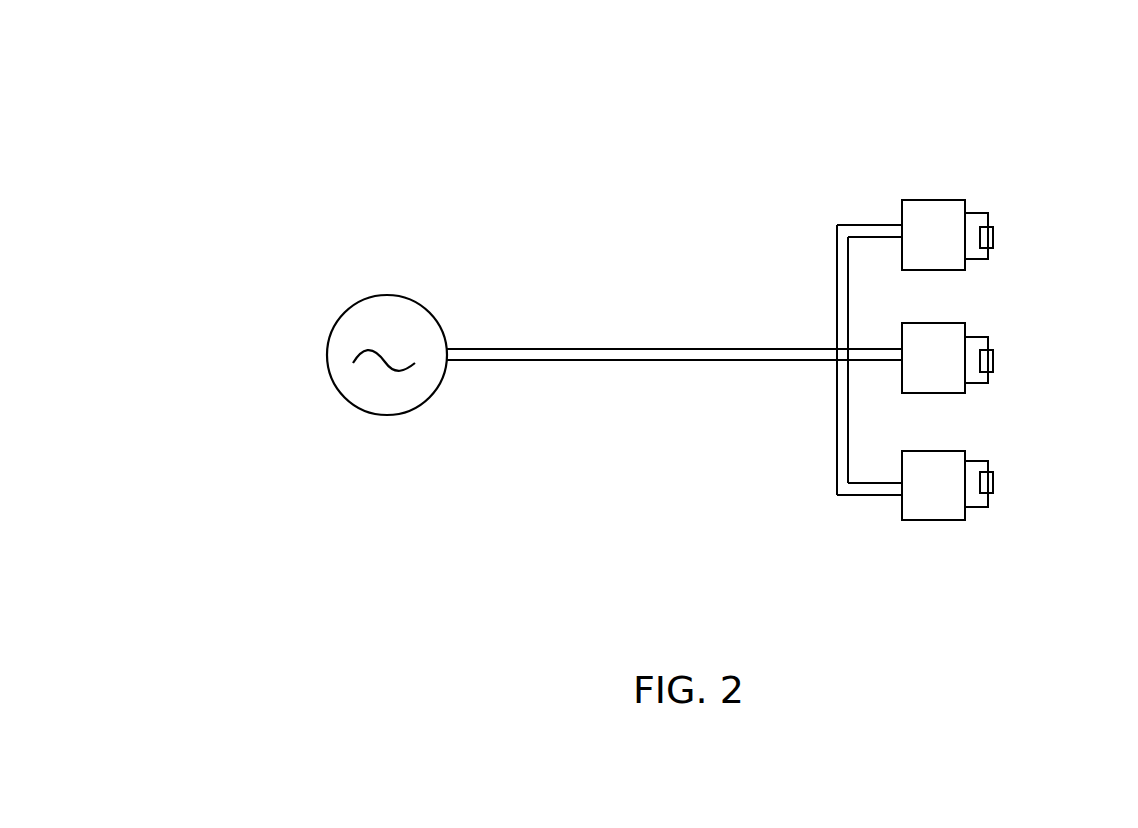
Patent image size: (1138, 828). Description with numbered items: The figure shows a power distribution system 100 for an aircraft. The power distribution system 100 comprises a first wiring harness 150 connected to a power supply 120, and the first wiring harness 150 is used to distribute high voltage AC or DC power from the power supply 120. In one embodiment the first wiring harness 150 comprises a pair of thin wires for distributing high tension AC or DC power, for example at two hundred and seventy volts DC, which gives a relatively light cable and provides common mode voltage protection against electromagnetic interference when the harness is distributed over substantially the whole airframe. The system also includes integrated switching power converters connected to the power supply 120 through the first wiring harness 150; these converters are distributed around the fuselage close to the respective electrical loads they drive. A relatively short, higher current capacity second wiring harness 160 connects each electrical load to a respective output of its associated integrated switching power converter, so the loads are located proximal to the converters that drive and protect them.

The power distribution system 100 is at (318, 81).
The power supply 120 is at (348, 402).
The first wiring harness 150 is at (603, 334).
The second wiring harness 160 is at (979, 186).